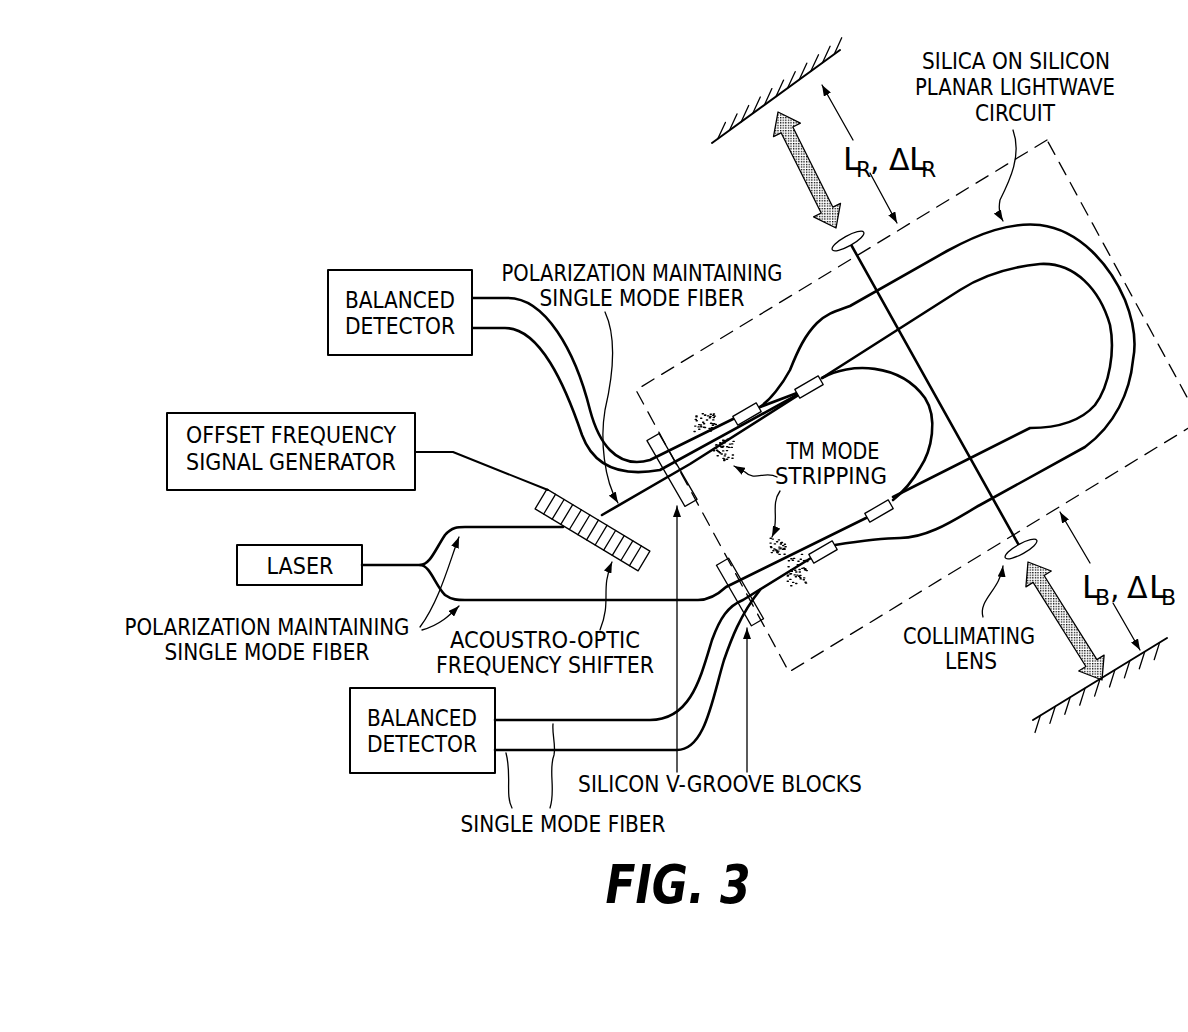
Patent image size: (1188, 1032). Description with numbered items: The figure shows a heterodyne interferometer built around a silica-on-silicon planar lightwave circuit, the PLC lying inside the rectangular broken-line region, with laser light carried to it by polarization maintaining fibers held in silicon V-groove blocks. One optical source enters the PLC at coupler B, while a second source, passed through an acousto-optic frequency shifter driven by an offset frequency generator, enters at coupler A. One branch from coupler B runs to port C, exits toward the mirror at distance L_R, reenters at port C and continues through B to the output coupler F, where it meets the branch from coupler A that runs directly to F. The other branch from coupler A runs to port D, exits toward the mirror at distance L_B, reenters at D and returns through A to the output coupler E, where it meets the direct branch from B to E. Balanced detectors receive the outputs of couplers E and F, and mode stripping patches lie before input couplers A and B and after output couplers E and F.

The input coupler A is at (809, 375).
The input coupler B is at (882, 519).
The PLC port C is at (858, 253).
The PLC port D is at (1021, 533).
The output coupler E is at (747, 399).
The output coupler F is at (827, 563).